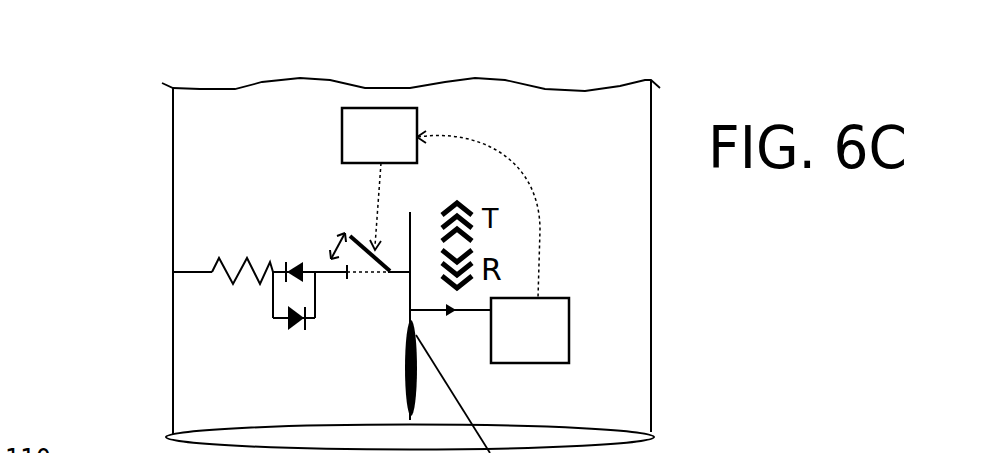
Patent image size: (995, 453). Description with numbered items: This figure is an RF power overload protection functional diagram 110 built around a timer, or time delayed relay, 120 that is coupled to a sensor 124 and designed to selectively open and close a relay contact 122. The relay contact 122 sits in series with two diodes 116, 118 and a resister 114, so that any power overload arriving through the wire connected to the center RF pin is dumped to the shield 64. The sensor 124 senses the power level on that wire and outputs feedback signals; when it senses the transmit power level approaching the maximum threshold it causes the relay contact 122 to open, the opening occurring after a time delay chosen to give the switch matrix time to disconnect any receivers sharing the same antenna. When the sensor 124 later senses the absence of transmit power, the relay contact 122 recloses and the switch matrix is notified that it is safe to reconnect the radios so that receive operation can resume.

The sensing device 110 is at (100, 112).
The shield 64 is at (173, 208).
The resister 114 is at (241, 265).
The diode 116 is at (297, 262).
The diode 118 is at (287, 322).
The timer (time delayed relay) 120 is at (387, 108).
The relay contact 122 is at (376, 250).
The sensor 124 is at (559, 297).